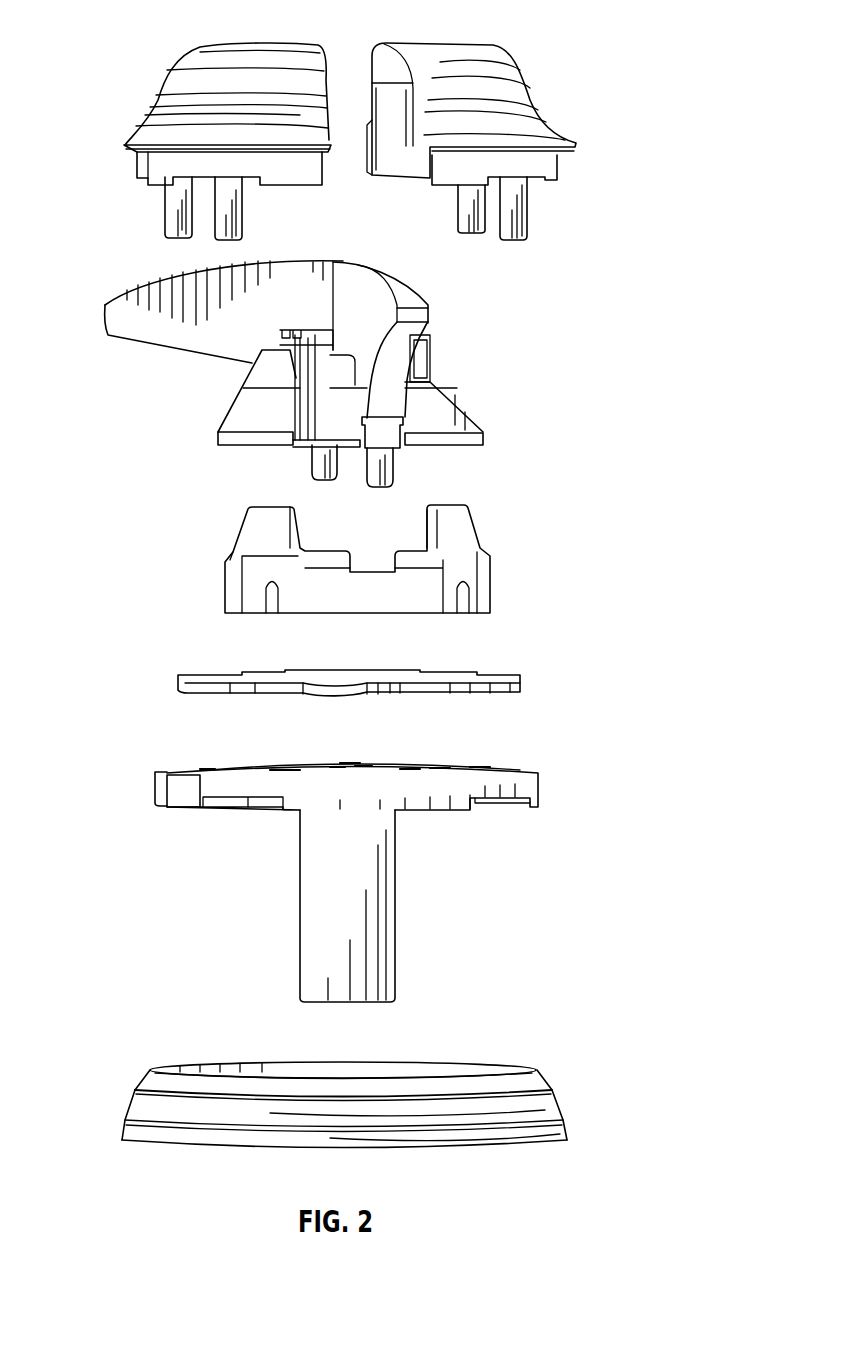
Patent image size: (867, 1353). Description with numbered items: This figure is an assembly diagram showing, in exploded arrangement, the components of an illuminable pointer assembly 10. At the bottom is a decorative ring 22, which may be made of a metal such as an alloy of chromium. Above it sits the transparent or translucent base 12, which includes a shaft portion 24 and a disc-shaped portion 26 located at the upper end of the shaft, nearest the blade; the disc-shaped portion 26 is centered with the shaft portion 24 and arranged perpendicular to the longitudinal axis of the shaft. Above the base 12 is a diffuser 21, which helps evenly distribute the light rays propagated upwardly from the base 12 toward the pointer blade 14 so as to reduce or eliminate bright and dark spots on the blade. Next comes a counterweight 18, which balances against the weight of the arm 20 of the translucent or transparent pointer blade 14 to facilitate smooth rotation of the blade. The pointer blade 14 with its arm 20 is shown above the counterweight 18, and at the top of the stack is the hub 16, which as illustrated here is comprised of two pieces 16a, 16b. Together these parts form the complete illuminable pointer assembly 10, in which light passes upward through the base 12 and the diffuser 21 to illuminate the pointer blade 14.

The illuminable pointer assembly 10 is at (666, 41).
The base 12 is at (346, 882).
The pointer blade 14 is at (460, 413).
The hub 16 is at (357, 123).
The first hub piece 16a is at (163, 90).
The second hub piece 16b is at (548, 162).
The counterweight 18 is at (470, 567).
The arm 20 is at (117, 322).
The diffuser 21 is at (520, 683).
The decorative ring 22 is at (540, 1103).
The shaft portion 24 is at (375, 920).
The disc-shaped portion 26 is at (172, 787).